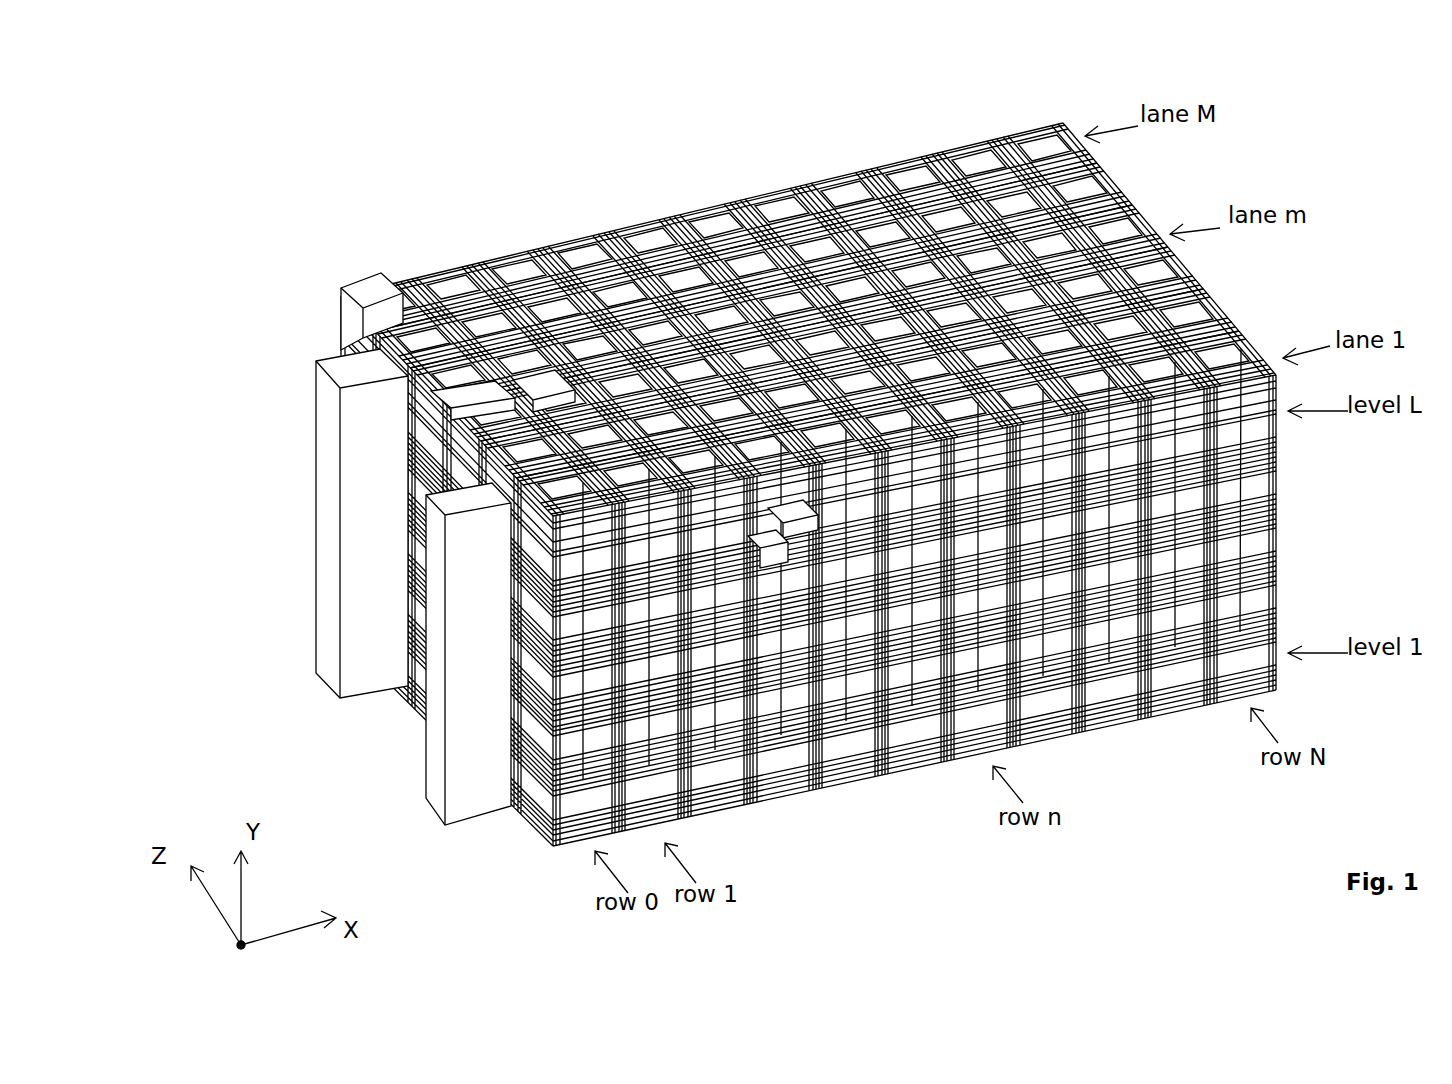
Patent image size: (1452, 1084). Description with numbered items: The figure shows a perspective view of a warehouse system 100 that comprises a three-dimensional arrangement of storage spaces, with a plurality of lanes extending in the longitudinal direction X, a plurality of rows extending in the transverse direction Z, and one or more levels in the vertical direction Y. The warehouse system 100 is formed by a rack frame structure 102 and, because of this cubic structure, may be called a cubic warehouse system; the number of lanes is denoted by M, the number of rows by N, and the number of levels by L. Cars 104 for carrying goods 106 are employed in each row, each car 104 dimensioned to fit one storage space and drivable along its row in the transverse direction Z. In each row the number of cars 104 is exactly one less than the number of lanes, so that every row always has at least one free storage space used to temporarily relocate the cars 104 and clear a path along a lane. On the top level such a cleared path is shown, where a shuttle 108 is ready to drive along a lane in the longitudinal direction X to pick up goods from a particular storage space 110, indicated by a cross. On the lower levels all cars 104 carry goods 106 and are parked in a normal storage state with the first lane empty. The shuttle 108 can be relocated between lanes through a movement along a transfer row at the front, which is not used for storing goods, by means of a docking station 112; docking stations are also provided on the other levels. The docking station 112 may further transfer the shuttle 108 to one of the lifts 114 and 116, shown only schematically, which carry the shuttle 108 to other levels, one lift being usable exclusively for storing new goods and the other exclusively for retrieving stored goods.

The warehouse system 100 is at (362, 131).
The rack frame structure 102 is at (547, 838).
The car 104 is at (778, 512).
The goods 106 is at (757, 540).
The shuttle 108 is at (522, 380).
The storage space 110 is at (855, 308).
The docking station 112 is at (447, 397).
The lift 114 is at (318, 555).
The lift 116 is at (428, 755).